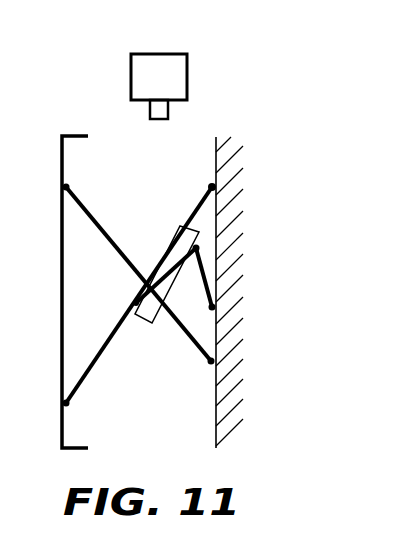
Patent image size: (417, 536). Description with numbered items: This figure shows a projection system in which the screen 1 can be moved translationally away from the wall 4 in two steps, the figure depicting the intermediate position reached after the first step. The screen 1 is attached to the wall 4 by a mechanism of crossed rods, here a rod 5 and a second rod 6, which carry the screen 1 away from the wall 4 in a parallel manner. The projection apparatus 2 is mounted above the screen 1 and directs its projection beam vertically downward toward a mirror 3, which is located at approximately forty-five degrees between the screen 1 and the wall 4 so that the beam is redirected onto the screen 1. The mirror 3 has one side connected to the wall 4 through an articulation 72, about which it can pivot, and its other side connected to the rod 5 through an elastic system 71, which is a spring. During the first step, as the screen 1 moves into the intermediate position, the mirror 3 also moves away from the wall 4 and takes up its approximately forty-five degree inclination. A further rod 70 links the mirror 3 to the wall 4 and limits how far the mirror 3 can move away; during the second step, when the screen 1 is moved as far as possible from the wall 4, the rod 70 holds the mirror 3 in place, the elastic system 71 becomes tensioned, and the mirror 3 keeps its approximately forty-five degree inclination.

The screen 1 is at (60, 283).
The projection apparatus 2 is at (187, 73).
The mirror 3 is at (172, 242).
The wall 4 is at (217, 387).
The rod 5 is at (93, 364).
The second arm 6 is at (92, 214).
The rod 70 is at (215, 275).
The elastic system 71 is at (133, 312).
The articulation 72 is at (211, 186).